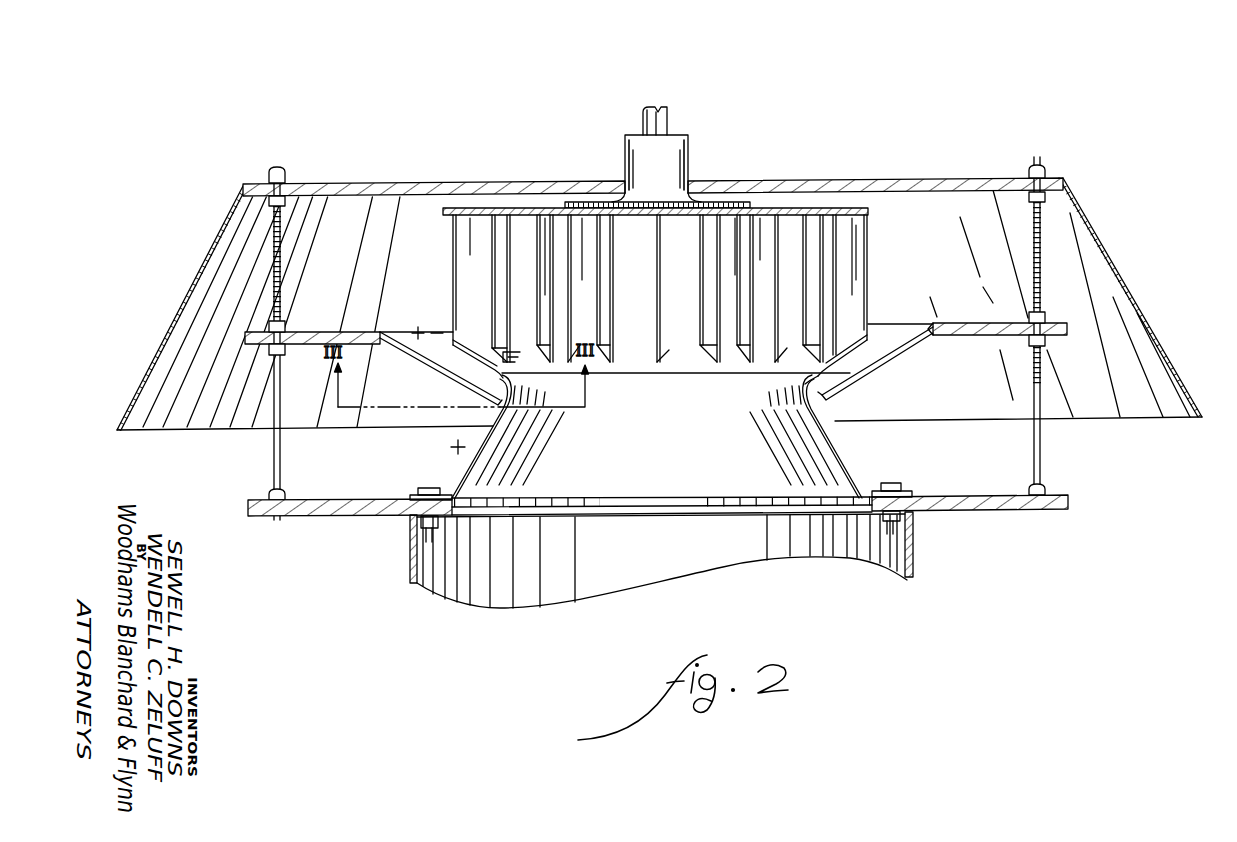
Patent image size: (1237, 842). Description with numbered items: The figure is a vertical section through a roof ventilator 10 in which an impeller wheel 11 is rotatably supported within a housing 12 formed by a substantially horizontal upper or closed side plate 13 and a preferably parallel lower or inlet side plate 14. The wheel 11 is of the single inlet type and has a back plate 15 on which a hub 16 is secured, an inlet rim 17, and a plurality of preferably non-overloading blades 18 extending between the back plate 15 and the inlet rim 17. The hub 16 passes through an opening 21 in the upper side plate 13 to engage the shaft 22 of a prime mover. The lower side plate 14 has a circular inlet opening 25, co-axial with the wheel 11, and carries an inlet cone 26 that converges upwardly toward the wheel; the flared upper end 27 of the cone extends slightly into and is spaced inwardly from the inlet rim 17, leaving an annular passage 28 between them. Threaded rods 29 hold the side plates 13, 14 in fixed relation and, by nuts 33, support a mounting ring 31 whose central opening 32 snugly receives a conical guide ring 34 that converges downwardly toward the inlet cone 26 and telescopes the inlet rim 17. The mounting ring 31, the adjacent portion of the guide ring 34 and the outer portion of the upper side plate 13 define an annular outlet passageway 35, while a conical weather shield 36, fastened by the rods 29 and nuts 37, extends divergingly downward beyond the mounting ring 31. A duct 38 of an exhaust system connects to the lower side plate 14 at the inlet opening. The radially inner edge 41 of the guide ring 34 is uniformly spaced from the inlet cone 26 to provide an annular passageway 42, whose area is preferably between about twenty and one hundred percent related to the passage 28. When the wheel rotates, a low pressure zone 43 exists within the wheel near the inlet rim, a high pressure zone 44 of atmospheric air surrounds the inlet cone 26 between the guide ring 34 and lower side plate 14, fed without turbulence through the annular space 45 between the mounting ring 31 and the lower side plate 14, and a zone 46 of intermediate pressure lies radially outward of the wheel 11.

The roof ventilator 10 is at (758, 148).
The impeller wheel 11 is at (875, 238).
The housing 12 is at (925, 172).
The upper side plate 13 is at (416, 184).
The lower side plate 14 is at (990, 509).
The back plate 15 is at (560, 208).
The hub 16 is at (628, 142).
The inlet rim 17 is at (466, 344).
The blades 18 is at (455, 240).
The opening 21 is at (620, 182).
The shaft 22 is at (670, 117).
The inlet opening 25 is at (470, 510).
The inlet cone 26 is at (498, 443).
The upper end 27 is at (808, 380).
The annular passage 28 is at (826, 362).
The threaded rods 29 is at (1046, 446).
The mounting ring 31 is at (958, 331).
The central opening 32 is at (933, 322).
The nuts 33 is at (1042, 322).
The guide ring 34 is at (880, 355).
The outlet passageway 35 is at (250, 270).
The weather shield 36 is at (1094, 222).
The nuts 37 is at (1042, 166).
The duct 38 is at (673, 568).
The radially inner edge 41 is at (829, 392).
The annular passageway 42 is at (813, 415).
The low pressure zone 43 is at (518, 342).
The high pressure zone 44 is at (432, 452).
The annular space 45 is at (1062, 456).
The zone of intermediate pressure 46 is at (430, 322).